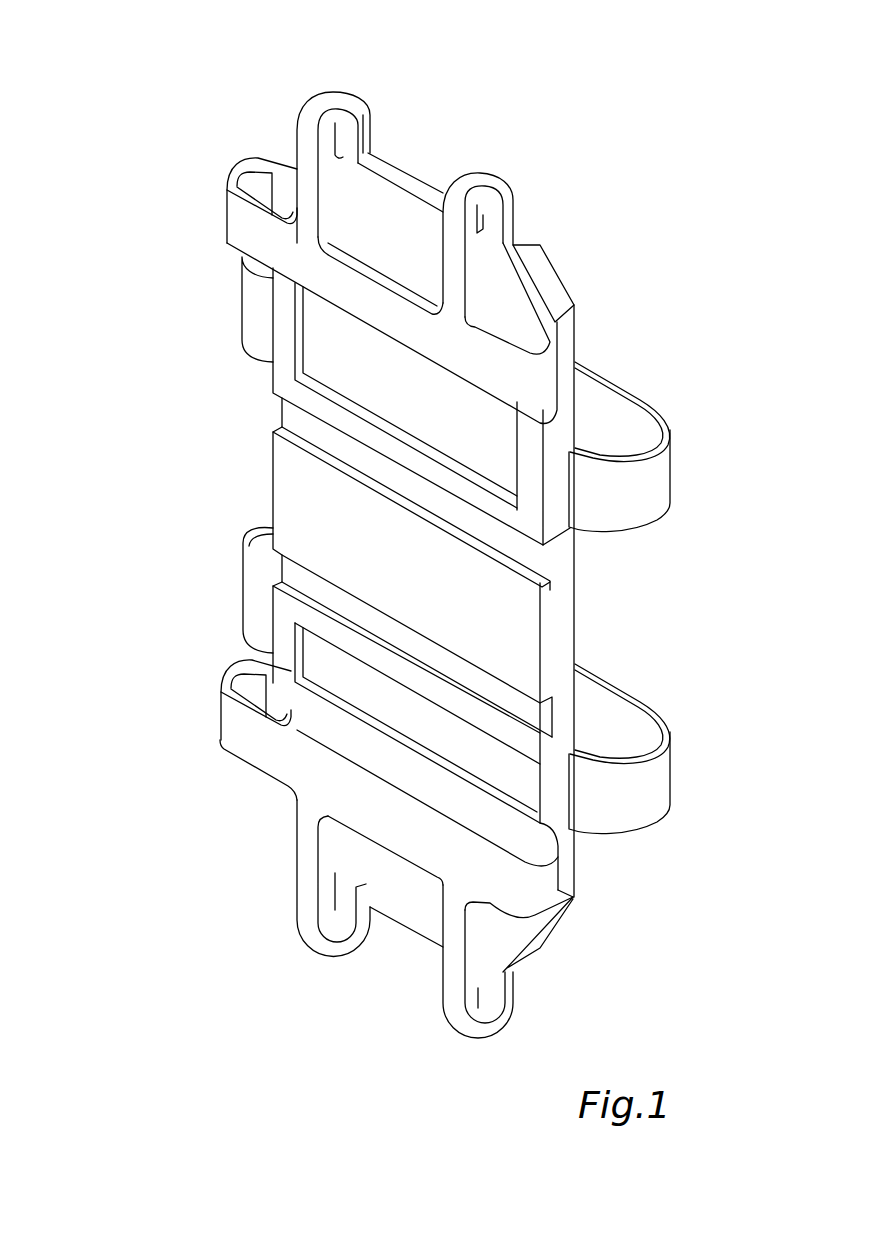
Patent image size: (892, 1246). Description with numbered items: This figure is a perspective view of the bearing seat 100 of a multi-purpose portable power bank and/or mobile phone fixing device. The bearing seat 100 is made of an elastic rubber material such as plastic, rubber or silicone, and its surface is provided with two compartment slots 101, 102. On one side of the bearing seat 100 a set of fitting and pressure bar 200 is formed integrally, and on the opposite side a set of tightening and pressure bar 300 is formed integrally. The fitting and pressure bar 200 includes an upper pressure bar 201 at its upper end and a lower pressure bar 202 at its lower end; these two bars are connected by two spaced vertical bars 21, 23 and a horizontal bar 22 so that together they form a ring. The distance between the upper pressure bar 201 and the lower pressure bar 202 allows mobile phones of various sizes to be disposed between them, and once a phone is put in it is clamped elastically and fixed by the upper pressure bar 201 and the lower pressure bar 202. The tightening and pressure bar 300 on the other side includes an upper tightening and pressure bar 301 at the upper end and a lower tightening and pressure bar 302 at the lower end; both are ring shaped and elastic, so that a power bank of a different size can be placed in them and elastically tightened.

The bearing seat 100 is at (647, 89).
The compartment slot 101 is at (290, 414).
The compartment slot 102 is at (303, 580).
The fitting and pressure bar 200 is at (200, 166).
The upper pressure bar 201 is at (215, 216).
The lower pressure bar 202 is at (232, 690).
The vertical bar 21 is at (318, 98).
The horizontal bar 22 is at (247, 238).
The vertical bar 23 is at (474, 179).
The tightening and pressure bar 300 is at (692, 426).
The upper tightening and pressure bar 301 is at (660, 467).
The lower tightening and pressure bar 302 is at (660, 779).